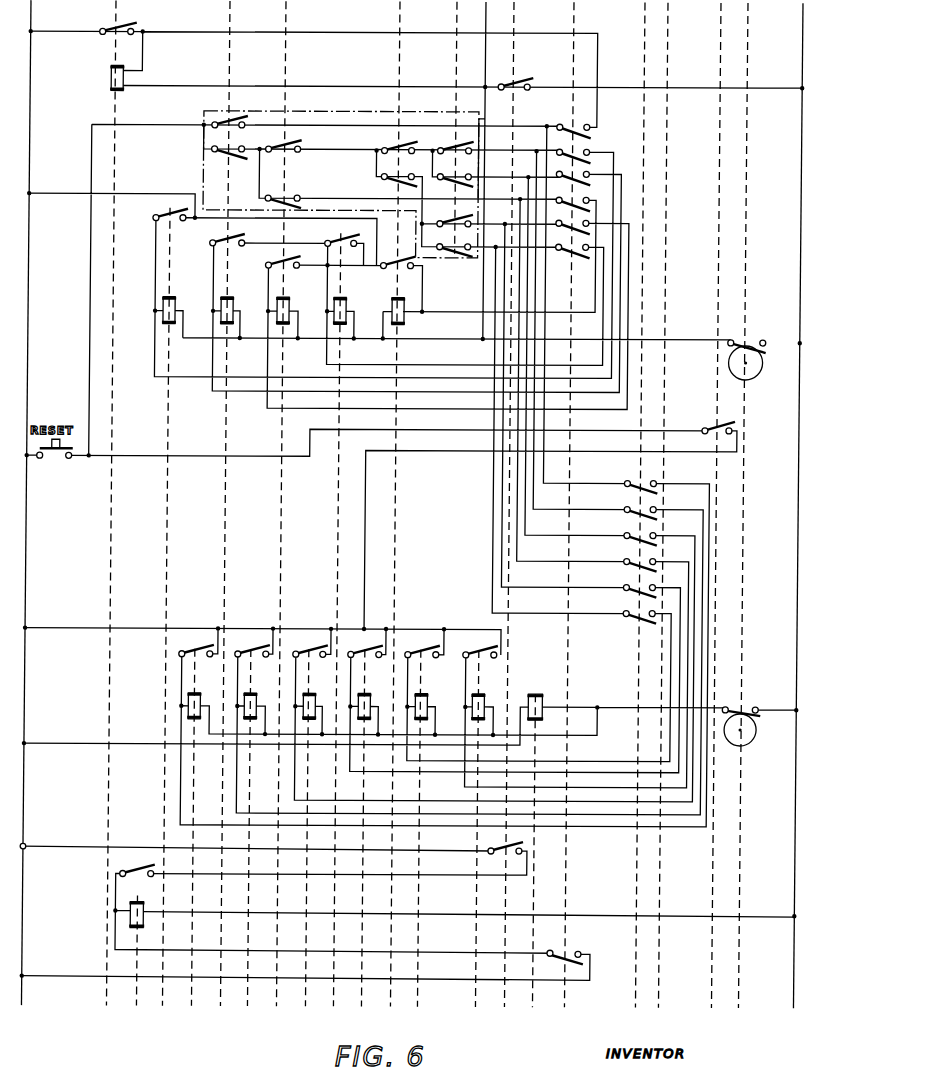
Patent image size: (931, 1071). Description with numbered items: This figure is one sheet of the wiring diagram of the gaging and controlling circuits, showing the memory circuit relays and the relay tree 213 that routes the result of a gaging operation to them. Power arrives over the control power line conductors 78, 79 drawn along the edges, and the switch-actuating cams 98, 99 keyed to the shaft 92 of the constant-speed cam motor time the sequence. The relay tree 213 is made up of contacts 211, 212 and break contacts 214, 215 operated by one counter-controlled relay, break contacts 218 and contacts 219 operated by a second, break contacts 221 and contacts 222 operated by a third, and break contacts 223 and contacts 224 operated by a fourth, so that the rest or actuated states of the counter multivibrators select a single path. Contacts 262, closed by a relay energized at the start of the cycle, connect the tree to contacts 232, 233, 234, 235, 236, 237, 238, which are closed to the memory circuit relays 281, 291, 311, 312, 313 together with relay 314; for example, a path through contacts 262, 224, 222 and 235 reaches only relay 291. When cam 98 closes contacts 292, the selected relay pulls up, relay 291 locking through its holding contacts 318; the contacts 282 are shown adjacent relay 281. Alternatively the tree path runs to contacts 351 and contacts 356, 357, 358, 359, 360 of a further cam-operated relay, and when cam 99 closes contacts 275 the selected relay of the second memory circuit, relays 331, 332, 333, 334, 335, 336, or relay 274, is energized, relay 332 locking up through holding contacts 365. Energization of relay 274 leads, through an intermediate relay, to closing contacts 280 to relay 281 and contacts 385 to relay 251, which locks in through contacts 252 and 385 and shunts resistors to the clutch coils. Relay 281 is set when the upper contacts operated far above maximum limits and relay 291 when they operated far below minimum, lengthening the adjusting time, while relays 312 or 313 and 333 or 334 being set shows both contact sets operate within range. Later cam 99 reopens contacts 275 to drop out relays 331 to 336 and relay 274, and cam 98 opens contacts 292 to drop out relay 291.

The control power line conductor 78 is at (52, 502).
The control power line conductor 79 is at (780, 505).
The shaft 92 is at (763, 505).
The cam 98 is at (757, 377).
The cam 99 is at (749, 756).
The contacts 211 is at (450, 186).
The contacts 212 is at (457, 263).
The relay tree 213 is at (310, 108).
The break contacts 214 is at (442, 143).
The break contacts 215 is at (450, 215).
The break contacts 218 is at (379, 142).
The contacts 219 is at (382, 184).
The break contacts 221 is at (301, 159).
The contacts 222 is at (283, 218).
The break contacts 223 is at (242, 109).
The contacts 224 is at (231, 166).
The contacts 232 is at (595, 118).
The contacts 233 is at (592, 147).
The contacts 234 is at (629, 171).
The contacts 235 is at (629, 197).
The contacts 236 is at (629, 220).
The contacts 237 is at (629, 245).
The contacts 238 is at (577, 946).
The relay 251 is at (101, 918).
The contacts 252 is at (137, 853).
The contacts 262 is at (703, 417).
The relay 274 is at (569, 703).
The contacts 275 is at (754, 698).
The contacts 280 is at (526, 74).
The relay 281 is at (145, 77).
The relay contact 282 is at (144, 42).
The relay 291 is at (423, 319).
The contacts 292 is at (759, 329).
The relay 311 is at (354, 299).
The relay 312 is at (294, 296).
The relay 313 is at (238, 296).
The relay 314 is at (180, 296).
The holding contacts 318 is at (422, 285).
The relay 331 is at (488, 694).
The relay 332 is at (431, 694).
The relay 333 is at (374, 693).
The relay 334 is at (319, 693).
The relay 335 is at (260, 693).
The relay 336 is at (204, 693).
The contacts 351 is at (614, 609).
The contacts 356 is at (617, 479).
The contacts 357 is at (615, 505).
The contacts 358 is at (615, 531).
The contacts 359 is at (615, 557).
The contacts 360 is at (614, 583).
The holding contacts 365 is at (419, 645).
The contacts 385 is at (480, 859).